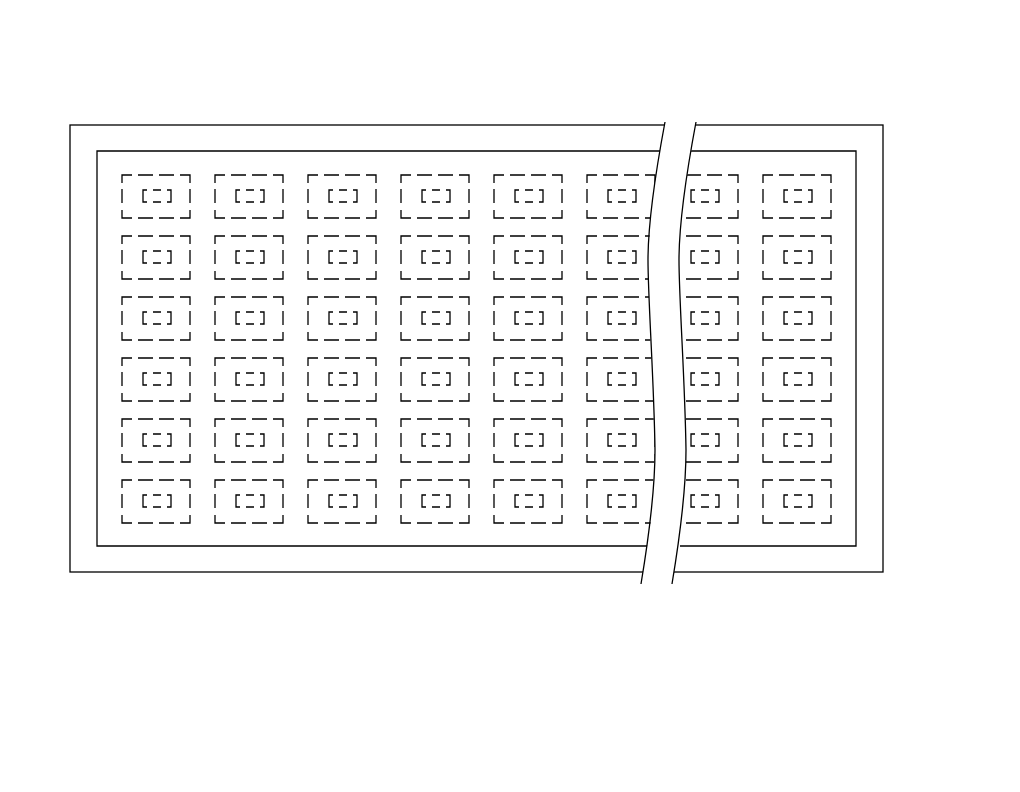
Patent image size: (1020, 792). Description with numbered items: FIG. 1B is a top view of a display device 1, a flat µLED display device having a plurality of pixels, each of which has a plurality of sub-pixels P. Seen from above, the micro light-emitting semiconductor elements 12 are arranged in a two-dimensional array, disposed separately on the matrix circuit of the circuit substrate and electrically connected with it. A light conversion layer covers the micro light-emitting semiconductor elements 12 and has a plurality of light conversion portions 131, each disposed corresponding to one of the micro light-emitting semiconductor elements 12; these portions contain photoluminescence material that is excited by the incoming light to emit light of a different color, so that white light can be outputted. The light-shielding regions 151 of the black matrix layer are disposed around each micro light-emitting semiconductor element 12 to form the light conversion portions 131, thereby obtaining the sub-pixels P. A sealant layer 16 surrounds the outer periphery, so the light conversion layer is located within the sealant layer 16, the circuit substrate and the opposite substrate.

The display device 1 is at (163, 43).
The micro light-emitting semiconductor element 12 is at (165, 194).
The light conversion portion 131 is at (298, 172).
The light-shielding region 151 is at (752, 178).
The sealant layer 16 is at (872, 172).
The sub-pixel P is at (359, 168).